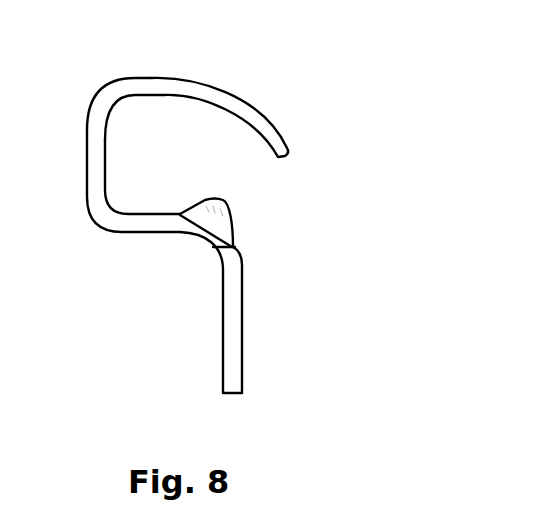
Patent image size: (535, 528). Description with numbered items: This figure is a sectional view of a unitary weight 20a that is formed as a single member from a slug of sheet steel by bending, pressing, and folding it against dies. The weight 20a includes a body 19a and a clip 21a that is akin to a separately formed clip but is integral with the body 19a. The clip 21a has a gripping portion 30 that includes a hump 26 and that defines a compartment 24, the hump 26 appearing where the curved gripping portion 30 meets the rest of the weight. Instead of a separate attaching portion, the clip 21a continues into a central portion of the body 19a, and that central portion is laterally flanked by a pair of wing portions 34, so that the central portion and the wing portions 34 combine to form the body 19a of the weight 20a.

The body 19a is at (281, 312).
The wing portions 34 is at (242, 330).
The weight 20a is at (330, 223).
The clip 21a is at (222, 81).
The compartment 24 is at (201, 142).
The hump 26 is at (228, 200).
The gripping portion 30 is at (130, 80).